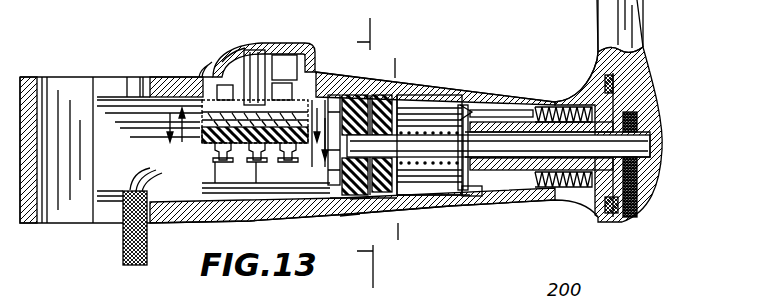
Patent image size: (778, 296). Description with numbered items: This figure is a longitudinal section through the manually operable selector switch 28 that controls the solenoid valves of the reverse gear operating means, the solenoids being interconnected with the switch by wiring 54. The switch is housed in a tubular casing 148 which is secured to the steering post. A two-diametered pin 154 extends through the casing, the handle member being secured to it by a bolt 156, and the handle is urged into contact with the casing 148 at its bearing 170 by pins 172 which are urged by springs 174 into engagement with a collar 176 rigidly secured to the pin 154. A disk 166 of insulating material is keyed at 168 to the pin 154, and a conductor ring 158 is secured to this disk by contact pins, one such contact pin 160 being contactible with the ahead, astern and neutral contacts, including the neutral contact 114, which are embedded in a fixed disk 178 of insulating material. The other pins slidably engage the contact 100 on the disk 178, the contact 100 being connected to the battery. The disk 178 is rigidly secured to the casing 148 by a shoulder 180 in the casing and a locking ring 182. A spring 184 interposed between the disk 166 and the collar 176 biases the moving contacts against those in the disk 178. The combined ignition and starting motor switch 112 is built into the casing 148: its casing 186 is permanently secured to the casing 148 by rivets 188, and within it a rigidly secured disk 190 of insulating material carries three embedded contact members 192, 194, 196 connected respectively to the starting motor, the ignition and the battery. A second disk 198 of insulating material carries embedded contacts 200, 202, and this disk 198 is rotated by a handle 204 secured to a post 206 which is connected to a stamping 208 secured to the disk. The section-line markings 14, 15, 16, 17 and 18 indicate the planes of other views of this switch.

The combined ignition and starting motor switch 112 is at (212, 62).
The second disk of insulating material 198 is at (200, 83).
The rivets 188 is at (213, 62).
The handle 204 is at (232, 46).
The post 206 is at (255, 50).
The stamping 208 is at (293, 54).
The propeller 16 is at (382, 25).
The locking ring 182 is at (347, 95).
The neutral contact 114 is at (357, 95).
The section line 15- 15 is at (378, 42).
The propeller shaft 14 is at (405, 68).
The contact pin 160 is at (400, 98).
The disk of insulating material 166 is at (412, 105).
The key 168 is at (447, 131).
The spring 184 is at (468, 90).
The selector switch 28 is at (500, 93).
The pins 172 is at (513, 120).
The springs 174 is at (558, 106).
The two-diametered pin 154 is at (623, 143).
The bolt 156 is at (652, 190).
The bearing 170 is at (597, 212).
The collar 176 is at (468, 196).
The conductor ring 158 is at (407, 200).
The disk of insulating material 178 is at (340, 204).
The contact 100 is at (352, 222).
The shoulder 180 is at (356, 230).
The reverse gear operating power means 18 is at (239, 148).
The section line 17- 17 is at (254, 134).
The casing 186 is at (200, 148).
The contact 200 is at (214, 152).
The disk of insulating material 190 is at (247, 156).
The contact member 196 is at (296, 162).
The contact 202 is at (328, 176).
The contact member 192 is at (215, 183).
The contact member 194 is at (256, 183).
The wiring 54 is at (123, 238).
The tubular casing 148 is at (193, 223).